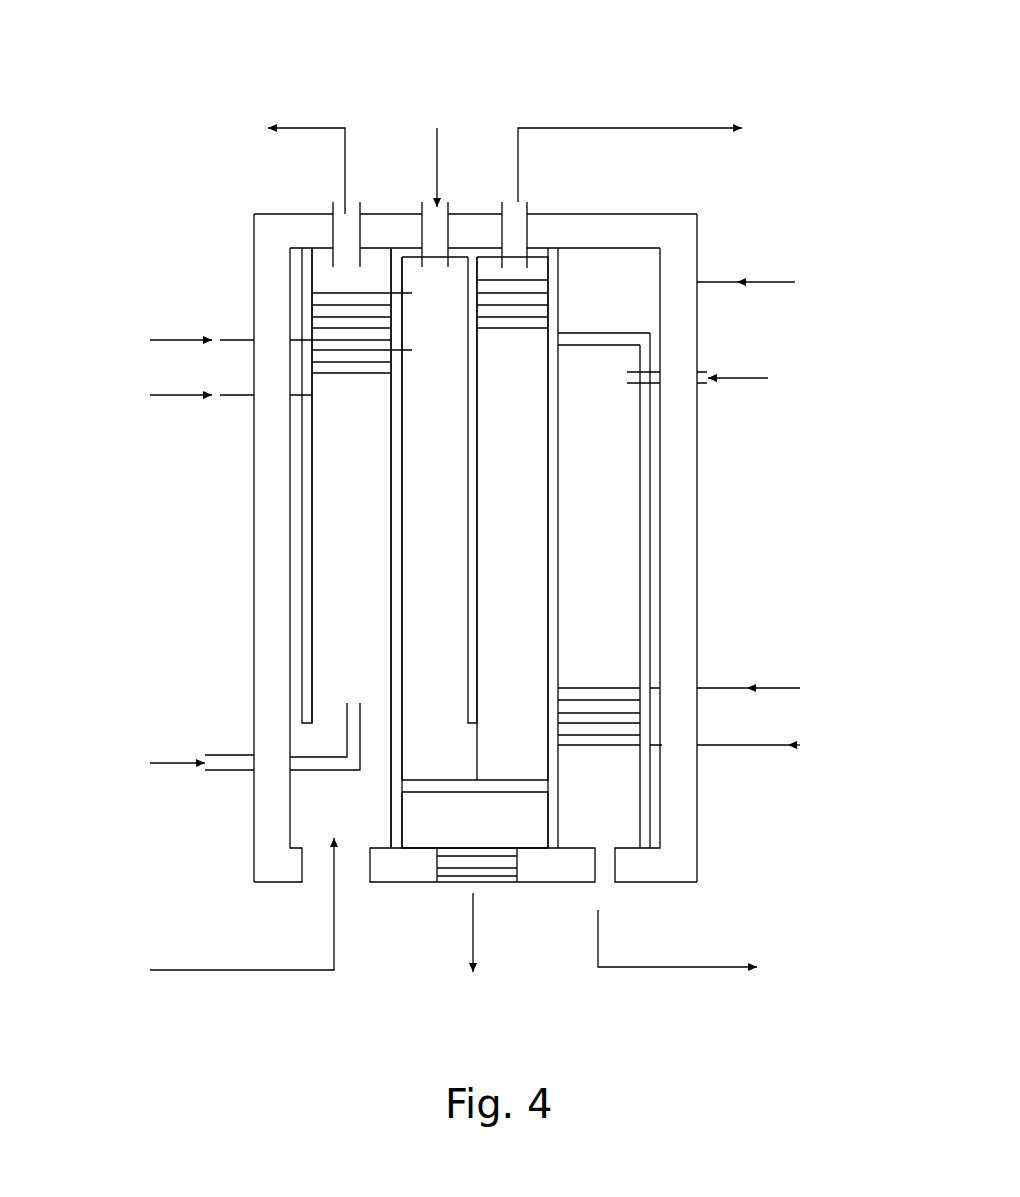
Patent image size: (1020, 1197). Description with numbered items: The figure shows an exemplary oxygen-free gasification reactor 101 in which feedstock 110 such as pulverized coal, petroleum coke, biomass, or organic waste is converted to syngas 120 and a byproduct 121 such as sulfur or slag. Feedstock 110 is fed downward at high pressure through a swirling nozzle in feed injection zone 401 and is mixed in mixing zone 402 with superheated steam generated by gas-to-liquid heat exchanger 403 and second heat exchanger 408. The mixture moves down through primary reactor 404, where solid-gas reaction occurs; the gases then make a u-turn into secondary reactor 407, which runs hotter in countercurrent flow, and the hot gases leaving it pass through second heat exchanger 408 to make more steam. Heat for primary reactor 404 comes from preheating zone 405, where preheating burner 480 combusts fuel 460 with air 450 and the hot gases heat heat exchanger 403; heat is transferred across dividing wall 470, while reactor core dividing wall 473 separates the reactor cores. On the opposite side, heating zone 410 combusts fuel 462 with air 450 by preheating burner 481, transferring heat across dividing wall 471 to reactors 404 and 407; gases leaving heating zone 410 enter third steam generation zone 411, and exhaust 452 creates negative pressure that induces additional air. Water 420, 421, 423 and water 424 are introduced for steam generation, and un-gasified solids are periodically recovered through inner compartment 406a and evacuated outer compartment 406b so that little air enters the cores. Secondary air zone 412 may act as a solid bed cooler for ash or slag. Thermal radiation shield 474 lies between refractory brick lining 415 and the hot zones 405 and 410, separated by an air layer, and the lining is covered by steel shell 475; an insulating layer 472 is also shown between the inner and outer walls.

The reactor 101 is at (530, 58).
The feedstock 110 is at (437, 154).
The syngas 120 is at (655, 188).
The byproduct 121 is at (473, 960).
The feed injection zone 401 is at (452, 207).
The mixing zone 402 is at (420, 310).
The gas-to-liquid heat exchanger 403 is at (343, 333).
The primary reactor 404 is at (420, 513).
The preheating zone 405 is at (335, 513).
The inner compartment 406a is at (458, 825).
The outer compartment 406b is at (457, 867).
The secondary reactor 407 is at (500, 513).
The second heat exchanger 408 is at (520, 297).
The heating zone 410 is at (585, 513).
The third steam generation zone 411 is at (636, 697).
The secondary air zone 412 is at (322, 818).
The refractory brick lining 415 is at (683, 560).
The water 420 is at (191, 368).
The water 421 is at (794, 282).
The water 423 is at (766, 688).
The water inlet 424 is at (770, 744).
The air 450 is at (208, 909).
The exhaust 452 is at (512, 548).
The fuel 460 is at (162, 763).
The fuel 462 is at (771, 380).
The dividing wall 470 is at (393, 468).
The dividing wall 471 is at (555, 420).
The insulating wall 472 is at (637, 243).
The reactor core dividing wall 473 is at (468, 590).
The thermal radiation shield 474 is at (305, 503).
The shell 475 is at (700, 862).
The preheating burner 480 is at (347, 713).
The preheating burner 481 is at (608, 378).